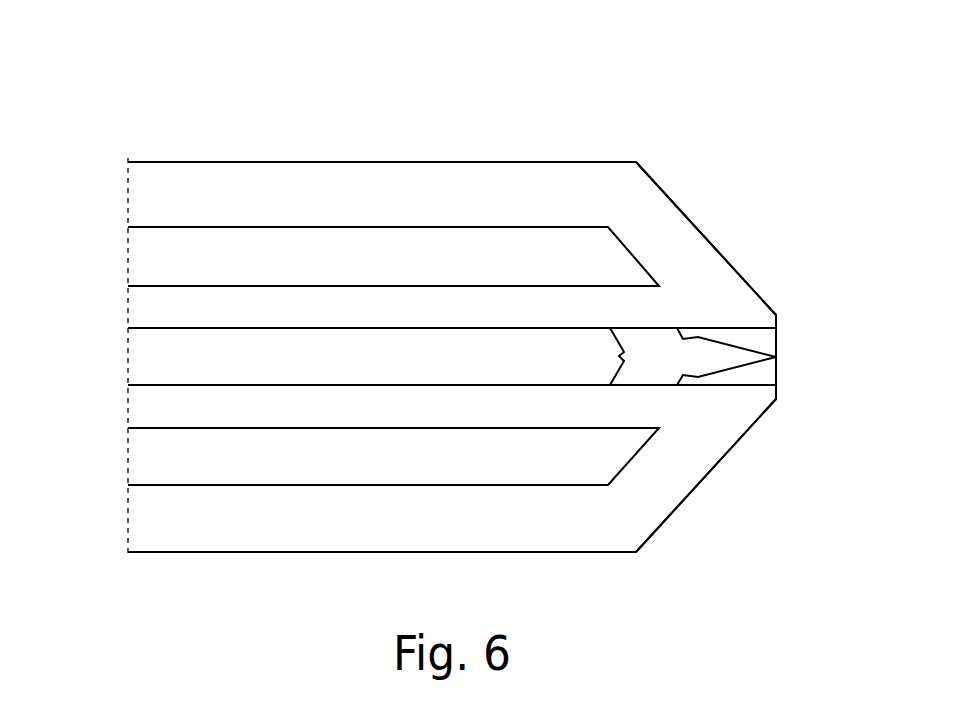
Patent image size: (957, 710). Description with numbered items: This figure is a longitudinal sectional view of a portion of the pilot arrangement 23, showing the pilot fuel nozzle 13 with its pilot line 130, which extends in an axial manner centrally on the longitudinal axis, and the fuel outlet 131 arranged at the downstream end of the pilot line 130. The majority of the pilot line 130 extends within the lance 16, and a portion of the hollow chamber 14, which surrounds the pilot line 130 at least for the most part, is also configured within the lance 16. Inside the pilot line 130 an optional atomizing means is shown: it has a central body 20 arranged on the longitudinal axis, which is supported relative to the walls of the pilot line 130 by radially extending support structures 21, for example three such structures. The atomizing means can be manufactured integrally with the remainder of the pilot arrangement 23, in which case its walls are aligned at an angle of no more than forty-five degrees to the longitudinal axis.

The pilot fuel nozzle 13 is at (538, 183).
The hollow chamber 14 is at (343, 253).
The lance 16 is at (229, 148).
The central body 20 is at (710, 357).
The support structures 21 is at (660, 380).
The pilot arrangement 23 is at (500, 119).
The pilot line 130 is at (153, 357).
The fuel outlet 131 is at (777, 367).